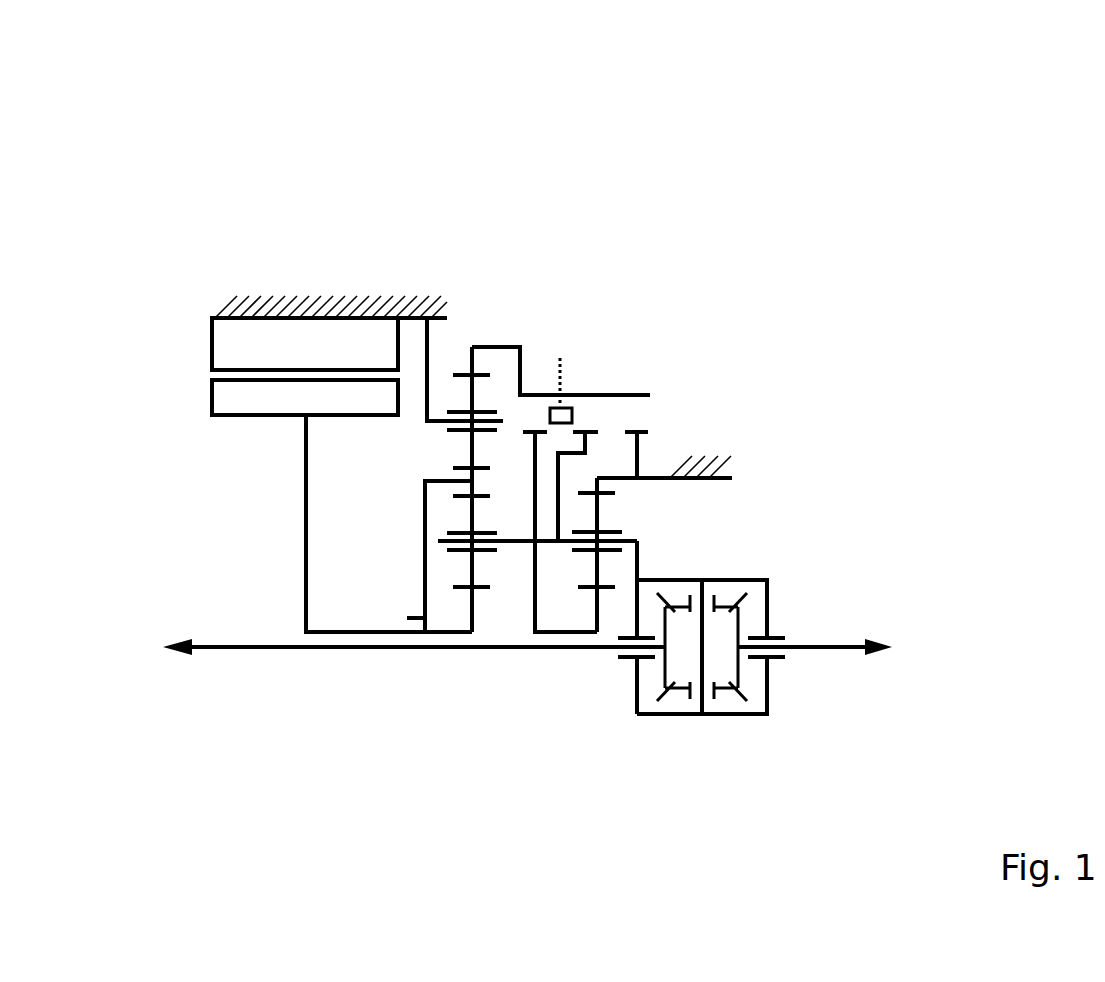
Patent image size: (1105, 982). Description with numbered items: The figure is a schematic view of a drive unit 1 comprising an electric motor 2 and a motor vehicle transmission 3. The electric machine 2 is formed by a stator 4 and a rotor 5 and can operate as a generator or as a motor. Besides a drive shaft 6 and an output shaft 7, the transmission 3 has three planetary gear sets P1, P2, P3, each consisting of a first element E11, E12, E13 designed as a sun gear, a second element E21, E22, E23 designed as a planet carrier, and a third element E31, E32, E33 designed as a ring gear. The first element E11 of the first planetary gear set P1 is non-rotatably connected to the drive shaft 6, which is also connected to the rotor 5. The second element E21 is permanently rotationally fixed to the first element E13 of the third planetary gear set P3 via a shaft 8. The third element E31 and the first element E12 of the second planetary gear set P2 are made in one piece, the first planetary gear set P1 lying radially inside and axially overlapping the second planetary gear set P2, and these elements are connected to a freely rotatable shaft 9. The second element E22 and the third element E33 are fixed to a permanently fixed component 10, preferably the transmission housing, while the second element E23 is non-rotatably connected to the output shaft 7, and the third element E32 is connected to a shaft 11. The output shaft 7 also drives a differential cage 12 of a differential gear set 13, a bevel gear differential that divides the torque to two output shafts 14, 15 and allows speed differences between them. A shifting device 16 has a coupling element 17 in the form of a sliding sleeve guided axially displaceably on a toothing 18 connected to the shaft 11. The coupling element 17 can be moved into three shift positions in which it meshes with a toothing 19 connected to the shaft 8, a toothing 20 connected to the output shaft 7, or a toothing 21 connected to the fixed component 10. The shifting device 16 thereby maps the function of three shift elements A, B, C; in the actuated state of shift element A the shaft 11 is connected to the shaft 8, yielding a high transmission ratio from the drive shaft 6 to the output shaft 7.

The drive unit 1 is at (263, 159).
The electric motor 2 is at (313, 285).
The motor vehicle transmission 3 is at (647, 131).
The stator 4 is at (240, 348).
The rotor 5 is at (240, 400).
The drive shaft 6 is at (355, 633).
The output shaft 7 is at (637, 562).
The shaft 8 is at (563, 633).
The shaft 9 is at (412, 620).
The fixed component 10 is at (720, 467).
The shaft 11 is at (522, 370).
The differential cage 12 is at (673, 714).
The differential gear set 13 is at (719, 726).
The output shaft 14 is at (287, 648).
The output shaft 15 is at (803, 648).
The shifting device 16 is at (595, 376).
The coupling element 17 is at (565, 408).
The toothing 18 is at (648, 395).
The toothing 19 is at (525, 430).
The toothing 20 is at (593, 430).
The toothing 21 is at (650, 430).
The first element of first planetary gear set E11 is at (466, 600).
The first element of second planetary gear set E12 is at (455, 469).
The first element of third planetary gear set E13 is at (600, 605).
The second element of first planetary gear set E21 is at (515, 543).
The second element of second planetary gear set E22 is at (443, 422).
The second element of third planetary gear set E23 is at (623, 539).
The third element of first planetary gear set E31 is at (453, 490).
The third element of second planetary gear set E32 is at (468, 347).
The third element of third planetary gear set E33 is at (607, 488).
The first planetary gear set P1 is at (472, 662).
The second planetary gear set P2 is at (472, 320).
The third planetary gear set P3 is at (597, 662).
The shift element A is at (535, 414).
The shift element B is at (584, 414).
The shift element C is at (638, 414).